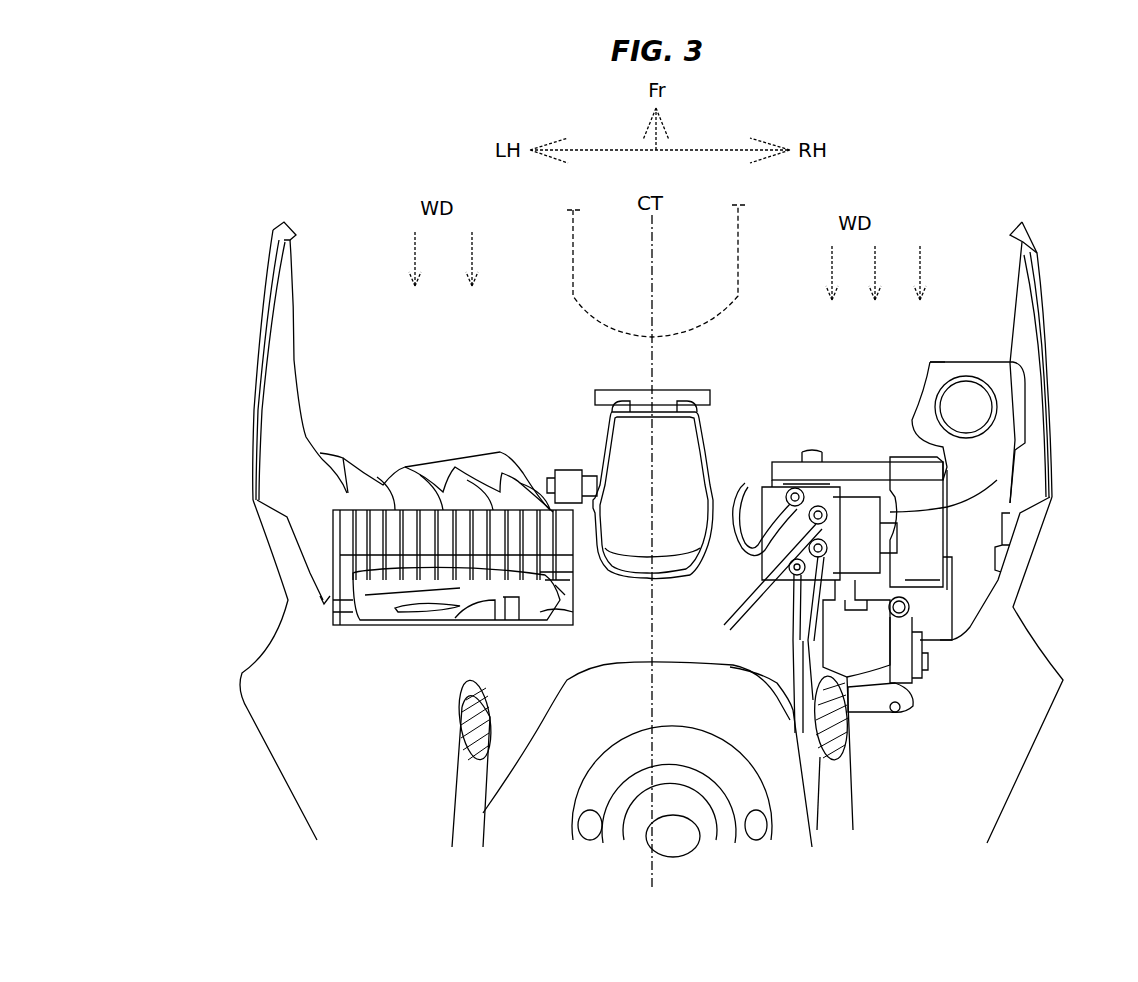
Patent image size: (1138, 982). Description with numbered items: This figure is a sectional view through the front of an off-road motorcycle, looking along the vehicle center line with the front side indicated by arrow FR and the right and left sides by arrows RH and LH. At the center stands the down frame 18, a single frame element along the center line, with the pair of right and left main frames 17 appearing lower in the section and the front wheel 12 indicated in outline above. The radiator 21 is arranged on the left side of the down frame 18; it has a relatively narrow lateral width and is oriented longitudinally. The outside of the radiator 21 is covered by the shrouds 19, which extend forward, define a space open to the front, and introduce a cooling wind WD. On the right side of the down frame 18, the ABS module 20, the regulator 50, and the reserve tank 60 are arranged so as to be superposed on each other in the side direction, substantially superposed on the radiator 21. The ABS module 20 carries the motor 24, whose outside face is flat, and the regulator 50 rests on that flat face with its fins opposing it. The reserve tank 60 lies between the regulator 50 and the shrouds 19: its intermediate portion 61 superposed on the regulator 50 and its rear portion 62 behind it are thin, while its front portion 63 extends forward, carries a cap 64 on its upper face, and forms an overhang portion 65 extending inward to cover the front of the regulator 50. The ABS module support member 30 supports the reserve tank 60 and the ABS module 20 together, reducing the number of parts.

The front wheel 12 is at (573, 222).
The main frames 17 is at (462, 780).
The down frame 18 is at (622, 437).
The shrouds 19 is at (262, 307).
The ABS module 20 is at (866, 476).
The radiator 21 is at (418, 530).
The motor 24 is at (970, 497).
The ABS module support member 30 is at (833, 548).
The regulator 50 is at (912, 476).
The reserve tank 60 is at (1002, 394).
The intermediate portion 61 is at (977, 525).
The rear portion 62 is at (973, 587).
The front portion 63 is at (1023, 363).
The cap 64 is at (985, 366).
The overhang portion 65 is at (935, 362).